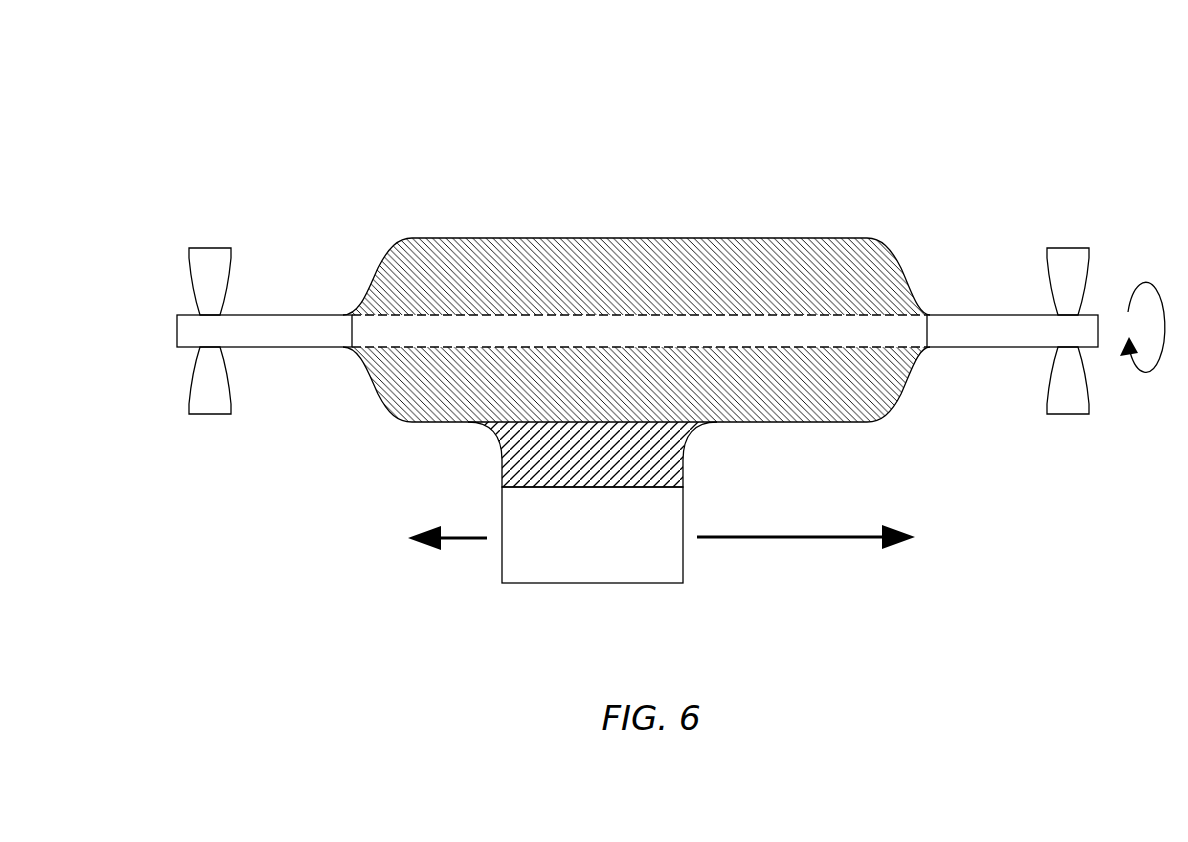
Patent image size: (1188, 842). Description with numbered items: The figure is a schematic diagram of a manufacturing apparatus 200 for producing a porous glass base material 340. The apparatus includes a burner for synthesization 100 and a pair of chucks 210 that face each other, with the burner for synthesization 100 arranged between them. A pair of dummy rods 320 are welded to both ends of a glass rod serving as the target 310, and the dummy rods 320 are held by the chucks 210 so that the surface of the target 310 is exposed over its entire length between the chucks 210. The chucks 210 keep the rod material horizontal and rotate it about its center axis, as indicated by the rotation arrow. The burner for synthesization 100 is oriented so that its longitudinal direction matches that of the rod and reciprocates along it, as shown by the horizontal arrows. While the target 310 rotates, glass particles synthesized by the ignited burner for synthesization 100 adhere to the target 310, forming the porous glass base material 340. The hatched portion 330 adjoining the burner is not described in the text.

The manufacturing apparatus 200 is at (142, 118).
The dummy rods 320 is at (291, 314).
The chucks 210 is at (210, 415).
The target 310 is at (417, 350).
The porous glass base material 340 is at (905, 393).
The protruding portion 330 is at (685, 462).
The burner for synthesization 100 is at (685, 563).